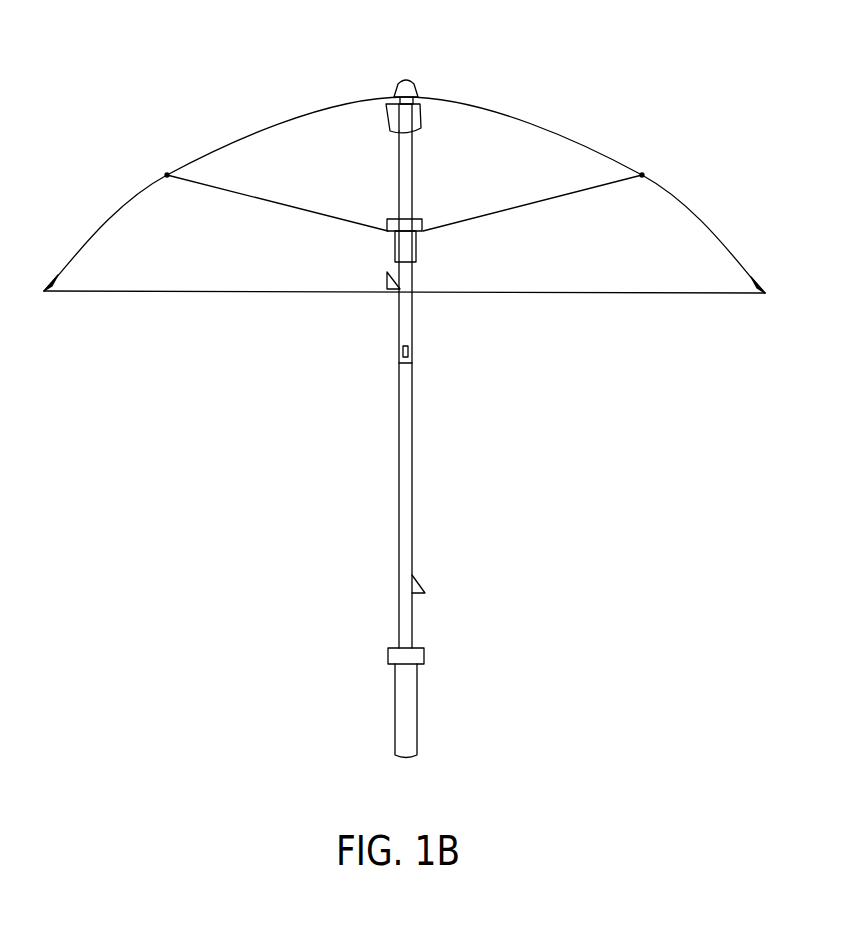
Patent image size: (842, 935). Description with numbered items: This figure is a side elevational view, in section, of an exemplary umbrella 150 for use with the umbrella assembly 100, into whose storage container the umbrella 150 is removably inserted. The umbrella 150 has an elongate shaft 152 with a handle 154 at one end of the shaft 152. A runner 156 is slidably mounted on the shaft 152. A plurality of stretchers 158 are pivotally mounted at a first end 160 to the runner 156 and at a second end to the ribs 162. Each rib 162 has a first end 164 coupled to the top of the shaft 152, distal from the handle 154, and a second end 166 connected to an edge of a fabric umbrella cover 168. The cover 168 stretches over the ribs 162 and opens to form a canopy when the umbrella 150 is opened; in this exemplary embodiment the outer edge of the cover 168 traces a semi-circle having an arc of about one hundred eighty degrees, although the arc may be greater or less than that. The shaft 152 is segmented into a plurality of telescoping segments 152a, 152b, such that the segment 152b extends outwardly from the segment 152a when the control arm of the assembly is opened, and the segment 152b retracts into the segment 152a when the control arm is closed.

The umbrella assembly 100 is at (640, 45).
The umbrella 150 is at (517, 45).
The elongate shaft 152 is at (413, 493).
The telescoping segment 152a is at (399, 530).
The telescoping segment 152b is at (398, 338).
The handle 154 is at (418, 688).
The runner 156 is at (425, 254).
The stretchers 158 is at (352, 234).
The first end 160 is at (388, 235).
The ribs 162 is at (212, 154).
The first end 164 is at (386, 110).
The second end 166 is at (48, 283).
The fabric umbrella cover 168 is at (570, 294).